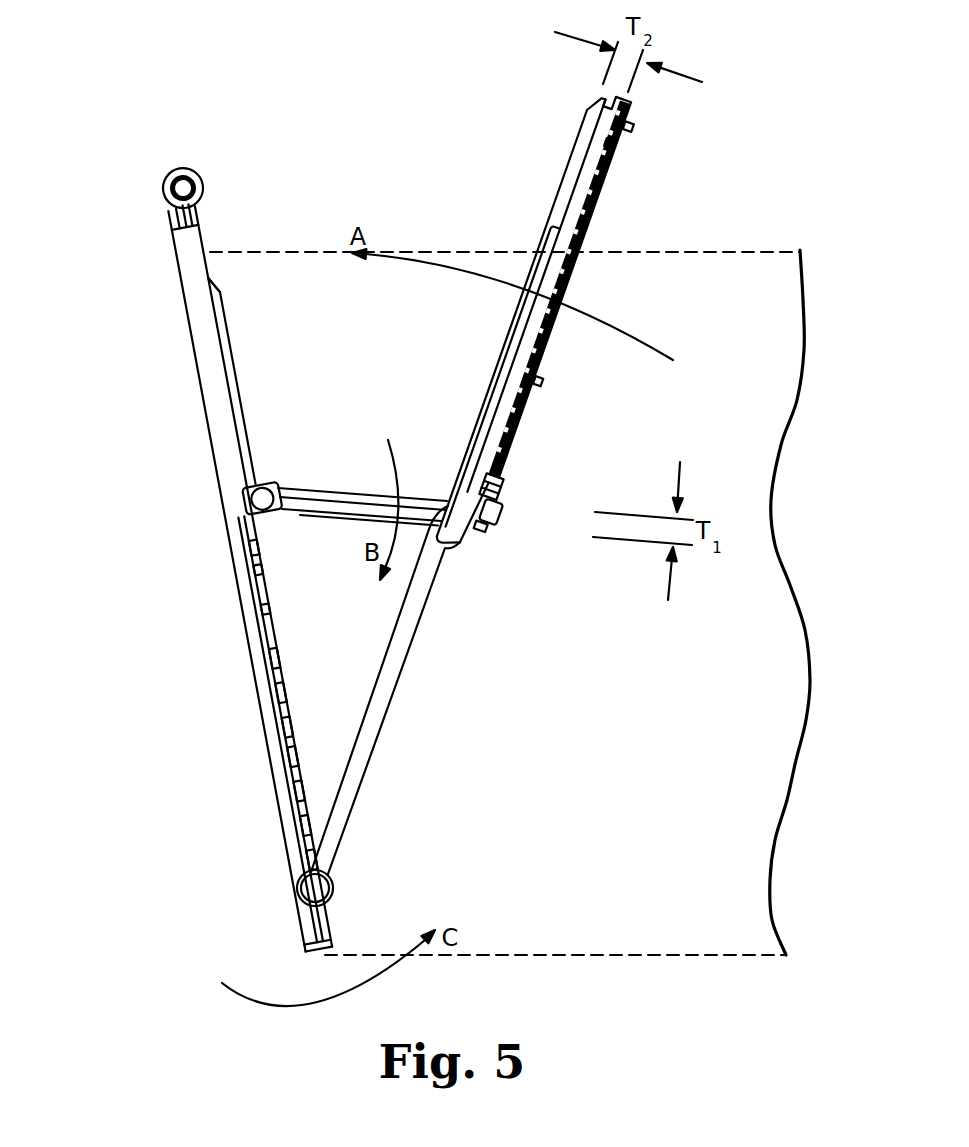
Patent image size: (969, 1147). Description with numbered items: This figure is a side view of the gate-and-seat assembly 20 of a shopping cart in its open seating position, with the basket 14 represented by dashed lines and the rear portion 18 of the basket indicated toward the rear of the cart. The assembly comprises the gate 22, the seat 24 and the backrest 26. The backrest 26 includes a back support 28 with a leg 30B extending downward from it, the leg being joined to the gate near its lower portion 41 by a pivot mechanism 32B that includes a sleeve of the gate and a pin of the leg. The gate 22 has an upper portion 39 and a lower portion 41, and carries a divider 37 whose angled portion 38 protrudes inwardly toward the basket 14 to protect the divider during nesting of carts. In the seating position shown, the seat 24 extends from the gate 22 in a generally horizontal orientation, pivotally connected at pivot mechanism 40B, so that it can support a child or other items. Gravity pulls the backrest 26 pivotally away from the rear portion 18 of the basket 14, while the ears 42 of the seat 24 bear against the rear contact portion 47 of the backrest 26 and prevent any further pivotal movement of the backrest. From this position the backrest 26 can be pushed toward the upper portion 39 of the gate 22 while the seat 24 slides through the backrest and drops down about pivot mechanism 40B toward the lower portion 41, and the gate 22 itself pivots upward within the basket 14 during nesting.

The basket 14 is at (764, 250).
The rear portion 18 is at (182, 726).
The gate-and-seat assembly 20 is at (315, 153).
The gate 22 is at (171, 313).
The seat 24 is at (343, 490).
The backrest 26 is at (546, 156).
The back support 28 is at (613, 160).
The leg 30B is at (363, 752).
The pivot mechanism 32B is at (352, 900).
The divider 37 is at (246, 326).
The angled portion 38 is at (222, 303).
The upper portion 39 is at (175, 231).
The pivot mechanism 40B is at (229, 511).
The lower portion 41 is at (283, 843).
The ears 42 is at (495, 523).
The rear contact portion 47 is at (481, 496).